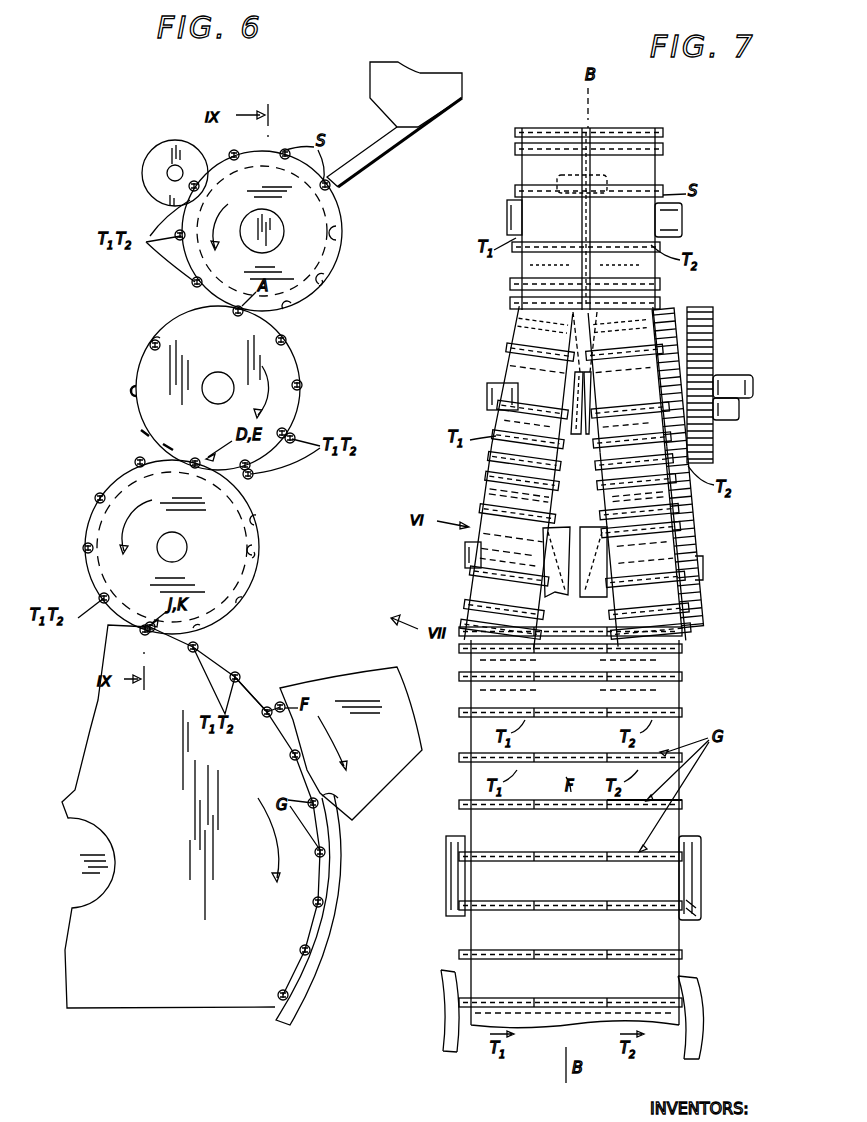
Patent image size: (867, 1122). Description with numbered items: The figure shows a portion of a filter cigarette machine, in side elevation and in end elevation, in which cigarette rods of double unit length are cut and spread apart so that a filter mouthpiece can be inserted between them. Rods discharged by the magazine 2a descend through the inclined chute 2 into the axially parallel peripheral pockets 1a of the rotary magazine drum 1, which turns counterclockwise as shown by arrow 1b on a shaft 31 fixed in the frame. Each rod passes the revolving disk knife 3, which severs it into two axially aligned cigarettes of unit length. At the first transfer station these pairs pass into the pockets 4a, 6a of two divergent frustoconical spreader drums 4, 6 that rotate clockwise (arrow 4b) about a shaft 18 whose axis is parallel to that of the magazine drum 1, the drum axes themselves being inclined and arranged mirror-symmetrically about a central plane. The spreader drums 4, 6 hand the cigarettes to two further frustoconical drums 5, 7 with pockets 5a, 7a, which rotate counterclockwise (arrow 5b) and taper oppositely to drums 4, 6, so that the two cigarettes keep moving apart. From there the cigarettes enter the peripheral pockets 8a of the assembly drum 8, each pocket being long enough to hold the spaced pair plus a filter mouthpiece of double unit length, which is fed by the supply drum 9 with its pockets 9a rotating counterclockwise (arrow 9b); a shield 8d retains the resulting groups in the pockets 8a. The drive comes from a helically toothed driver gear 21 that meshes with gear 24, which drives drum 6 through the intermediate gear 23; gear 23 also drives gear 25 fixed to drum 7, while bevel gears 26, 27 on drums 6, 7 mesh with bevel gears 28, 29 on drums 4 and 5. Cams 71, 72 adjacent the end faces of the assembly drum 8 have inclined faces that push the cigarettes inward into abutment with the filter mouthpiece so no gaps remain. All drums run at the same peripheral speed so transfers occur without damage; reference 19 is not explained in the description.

In FIG. 6, the magazine drum 1 is at (331, 227).
In FIG. 7, the magazine drum 1 is at (645, 176).
In FIG. 6, the peripheral pockets 1a is at (321, 279).
In FIG. 6, the arrow 1b is at (229, 225).
In FIG. 6, the inclined chute 2 is at (371, 168).
In FIG. 6, the magazine 2a is at (378, 79).
In FIG. 6, the revolving disk knife 3 is at (194, 151).
In FIG. 7, the revolving disk knife 3 is at (582, 168).
In FIG. 6, the spreader drum 4 is at (280, 363).
In FIG. 7, the spreader drum 4 is at (520, 333).
In FIG. 6, the peripheral pockets 4a is at (152, 345).
In FIG. 7, the peripheral pockets 4a is at (542, 362).
In FIG. 6, the arrow 4b is at (252, 392).
In FIG. 6, the frustoconical drum 5 is at (232, 528).
In FIG. 7, the frustoconical drum 5 is at (500, 500).
In FIG. 6, the peripheral pockets 5a is at (254, 549).
In FIG. 7, the peripheral pockets 5a is at (512, 527).
In FIG. 6, the arrow 5b is at (136, 527).
In FIG. 7, the spreader drum 6 is at (616, 343).
In FIG. 7, the peripheral pockets 6a is at (628, 360).
In FIG. 7, the frustoconical drum 7 is at (668, 505).
In FIG. 7, the peripheral pockets 7a is at (638, 527).
In FIG. 6, the assembly drum 8 is at (89, 727).
In FIG. 7, the assembly drum 8 is at (665, 834).
In FIG. 6, the peripheral pockets 8a is at (301, 951).
In FIG. 7, the peripheral pockets 8a is at (679, 815).
In FIG. 6, the shield 8d is at (331, 920).
In FIG. 6, the supply drum 9 is at (320, 688).
In FIG. 6, the peripheral pockets 9a is at (331, 800).
In FIG. 6, the arrow 9b is at (327, 745).
In FIG. 6, the shaft 18 is at (216, 400).
In FIG. 7, the shaft 18 is at (487, 394).
In FIG. 6, the shaft of third drum 19 is at (187, 549).
In FIG. 7, the shaft of third drum 19 is at (465, 554).
In FIG. 7, the driver gear 21 is at (714, 316).
In FIG. 7, the intermediate gear 23 is at (670, 318).
In FIG. 7, the gear 24 is at (724, 384).
In FIG. 7, the gear 25 is at (703, 617).
In FIG. 7, the bevel gear 26 is at (590, 440).
In FIG. 7, the bevel gear 27 is at (585, 598).
In FIG. 7, the bevel gear 28 is at (582, 438).
In FIG. 7, the bevel gear 29 is at (560, 598).
In FIG. 6, the shaft 31 is at (272, 239).
In FIG. 7, the shaft 31 is at (507, 210).
In FIG. 7, the cam 71 is at (702, 1008).
In FIG. 7, the cam 72 is at (438, 1018).